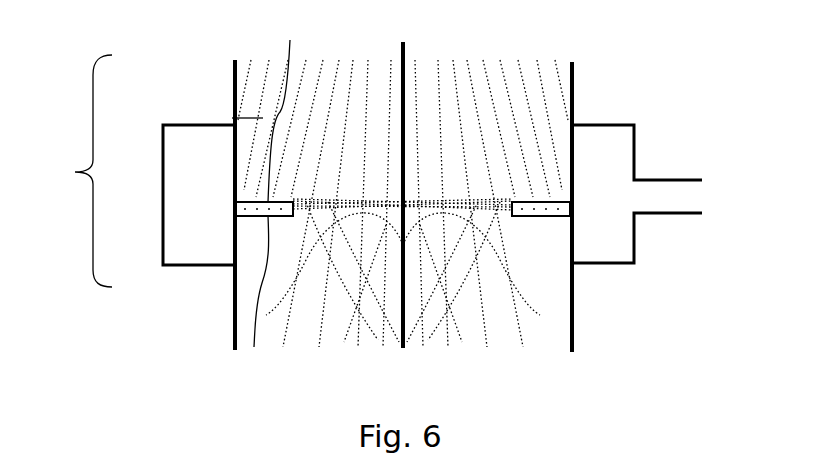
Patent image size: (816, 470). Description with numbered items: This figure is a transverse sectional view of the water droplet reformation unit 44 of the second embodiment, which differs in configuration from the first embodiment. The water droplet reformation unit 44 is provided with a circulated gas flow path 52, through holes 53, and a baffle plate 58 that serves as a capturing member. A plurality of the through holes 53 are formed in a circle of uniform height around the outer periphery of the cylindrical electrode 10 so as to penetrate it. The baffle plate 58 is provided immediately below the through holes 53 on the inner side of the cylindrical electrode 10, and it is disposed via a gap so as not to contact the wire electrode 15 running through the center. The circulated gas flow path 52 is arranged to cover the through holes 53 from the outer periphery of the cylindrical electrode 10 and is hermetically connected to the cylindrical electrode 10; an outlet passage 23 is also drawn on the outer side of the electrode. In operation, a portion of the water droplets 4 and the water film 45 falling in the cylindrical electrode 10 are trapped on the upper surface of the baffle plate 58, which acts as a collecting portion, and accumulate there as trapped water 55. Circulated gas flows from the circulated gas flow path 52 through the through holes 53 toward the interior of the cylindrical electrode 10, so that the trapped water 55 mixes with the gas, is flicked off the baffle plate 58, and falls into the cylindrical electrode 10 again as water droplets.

The water droplets 4 is at (232, 118).
The cylindrical electrode 10 is at (572, 320).
The wire electrode 15 is at (403, 48).
The outlet channel 23 is at (677, 213).
The water droplet reformation unit 44 is at (38, 184).
The water film 45 is at (235, 95).
The circulated gas flow path 52 is at (605, 125).
The through holes 53 is at (235, 197).
The trapped water 55 is at (286, 108).
The baffle plate 58 is at (255, 295).